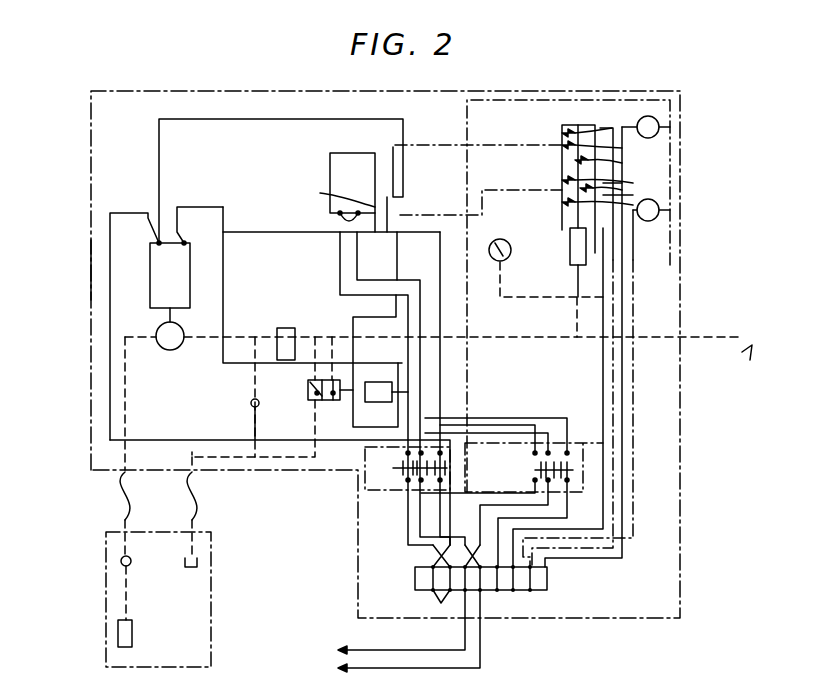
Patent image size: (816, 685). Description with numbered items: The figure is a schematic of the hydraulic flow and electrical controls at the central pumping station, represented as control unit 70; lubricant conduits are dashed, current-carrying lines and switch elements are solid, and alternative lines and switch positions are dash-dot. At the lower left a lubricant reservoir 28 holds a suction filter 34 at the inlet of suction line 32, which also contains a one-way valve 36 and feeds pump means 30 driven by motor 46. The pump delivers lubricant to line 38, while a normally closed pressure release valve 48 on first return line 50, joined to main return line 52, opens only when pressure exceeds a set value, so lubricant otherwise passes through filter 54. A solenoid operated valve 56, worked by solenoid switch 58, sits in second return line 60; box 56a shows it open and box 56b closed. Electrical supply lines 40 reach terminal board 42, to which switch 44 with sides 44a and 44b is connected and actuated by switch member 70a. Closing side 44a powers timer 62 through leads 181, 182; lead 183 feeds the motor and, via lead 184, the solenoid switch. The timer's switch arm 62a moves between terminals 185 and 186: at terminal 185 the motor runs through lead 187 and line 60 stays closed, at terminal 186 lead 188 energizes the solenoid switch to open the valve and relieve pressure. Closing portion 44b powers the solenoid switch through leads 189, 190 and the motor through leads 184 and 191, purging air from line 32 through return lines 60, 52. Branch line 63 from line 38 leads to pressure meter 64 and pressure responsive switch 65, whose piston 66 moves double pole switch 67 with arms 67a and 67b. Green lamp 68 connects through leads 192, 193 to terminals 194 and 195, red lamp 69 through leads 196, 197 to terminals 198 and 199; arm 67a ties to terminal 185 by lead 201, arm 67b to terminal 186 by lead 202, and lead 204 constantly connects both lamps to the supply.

The lubricant reservoir 28 is at (200, 645).
The pump means 30 is at (166, 350).
The suction line 32 is at (122, 482).
The suction filter 34 is at (130, 632).
The one-way valve 36 is at (130, 565).
The line 38 is at (763, 357).
The electrical supply lines 40 is at (380, 660).
The terminal board 42 is at (547, 580).
The switch 44 is at (452, 446).
The switch side 44a is at (403, 481).
The switch portion 44b is at (526, 476).
The motor 46 is at (165, 302).
The pressure release valve 48 is at (250, 403).
The first lubricant return line 50 is at (254, 417).
The main lubricant return line 52 is at (196, 486).
The filter 54 is at (286, 326).
The solenoid operated valve 56 is at (314, 401).
The box 56a is at (326, 380).
The box 56b is at (308, 390).
The solenoid switch 58 is at (386, 404).
The second lubricant return line 60 is at (326, 404).
The timer 62 is at (330, 157).
The switch arm 62a is at (332, 191).
The branch line 63 is at (585, 322).
The pressure indicating meter 64 is at (507, 258).
The pressure responsive switch 65 is at (562, 216).
The piston 66 is at (570, 240).
The double pole switch 67 is at (565, 178).
The switch arm 67a is at (562, 133).
The switch arm 67b is at (622, 192).
The green signal lamp 68 is at (648, 138).
The red signal lamp 69 is at (650, 221).
The control unit 70 is at (83, 340).
The manually operable switch member 70a is at (366, 455).
The lead 181 is at (426, 262).
The lead 182 is at (340, 262).
The lead 183 is at (288, 214).
The lead 184 is at (223, 275).
The terminal 185 is at (375, 195).
The terminal 186 is at (358, 214).
The lead 187 is at (264, 108).
The lead 188 is at (360, 311).
The lead 189 is at (540, 430).
The lead 190 is at (520, 416).
The lead 191 is at (91, 258).
The lead 192 is at (622, 135).
The lead 193 is at (613, 128).
The terminal 194 is at (594, 125).
The terminal 195 is at (580, 190).
The lead 196 is at (634, 290).
The lead 197 is at (598, 295).
The terminal 198 is at (624, 178).
The terminal 199 is at (575, 160).
The lead 201 is at (420, 150).
The lead 202 is at (452, 200).
The lead 204 is at (467, 104).